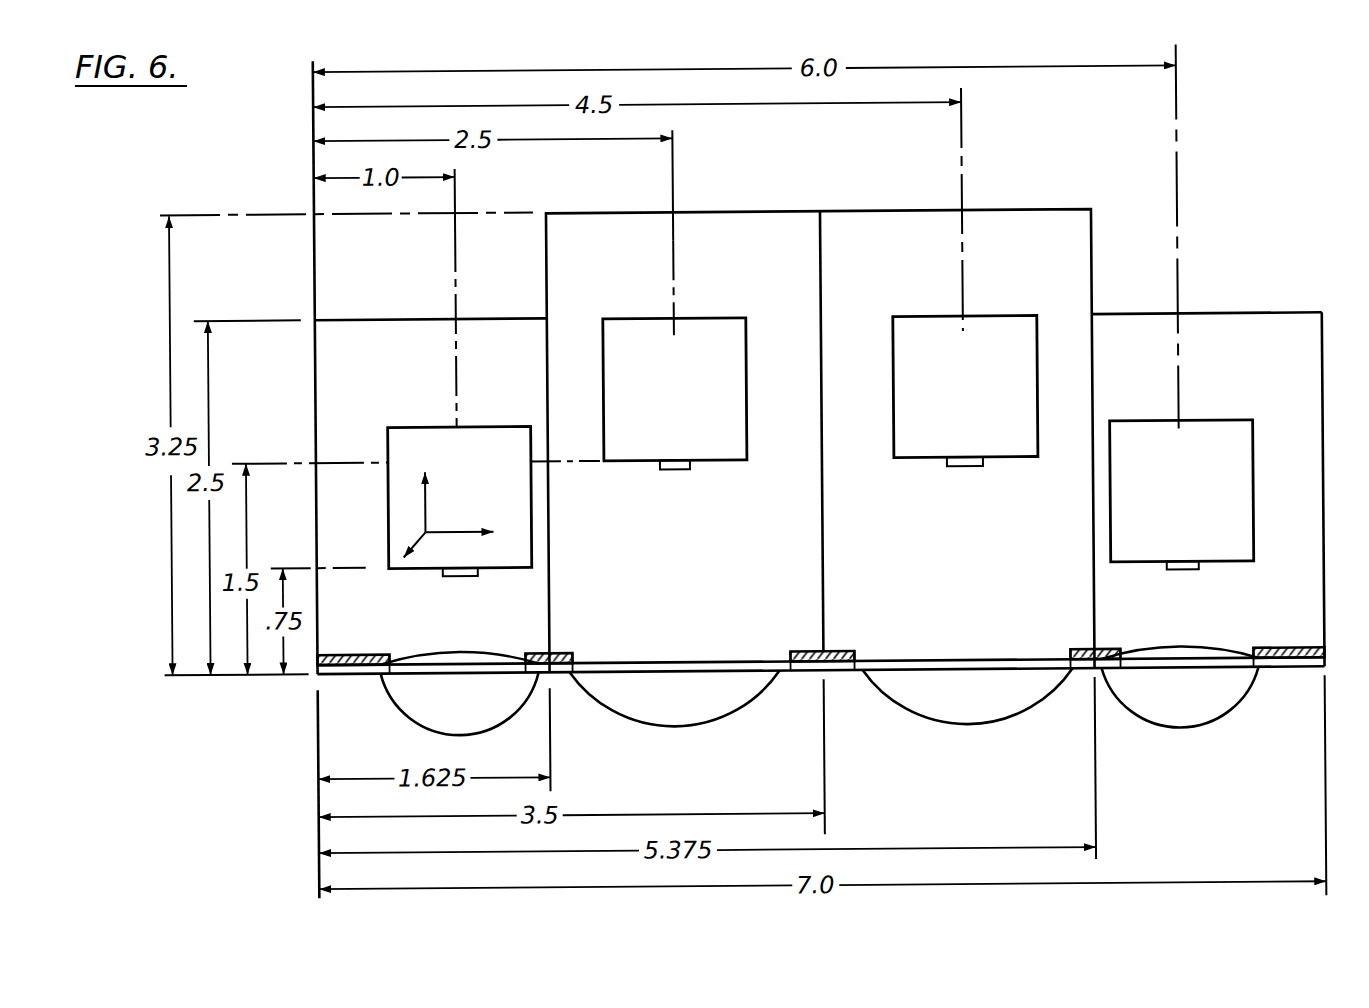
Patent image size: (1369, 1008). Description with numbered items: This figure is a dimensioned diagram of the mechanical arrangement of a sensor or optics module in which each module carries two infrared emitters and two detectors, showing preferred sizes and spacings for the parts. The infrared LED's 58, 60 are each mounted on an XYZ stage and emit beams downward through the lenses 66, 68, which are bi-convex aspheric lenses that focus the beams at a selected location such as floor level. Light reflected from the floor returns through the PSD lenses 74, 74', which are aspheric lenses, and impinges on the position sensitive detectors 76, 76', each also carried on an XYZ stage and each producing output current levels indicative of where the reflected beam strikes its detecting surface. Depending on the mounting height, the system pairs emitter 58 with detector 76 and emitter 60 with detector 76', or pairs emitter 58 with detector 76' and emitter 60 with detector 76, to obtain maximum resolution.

The infrared LED 58 is at (690, 466).
The infrared LED 60 is at (984, 463).
The lens 66 is at (722, 713).
The lens 68 is at (1003, 722).
The PSD lens 74 is at (440, 702).
The PSD lens 74' is at (1194, 700).
The position sensitive detector 76 is at (462, 520).
The position sensitive detector 76' is at (1196, 512).